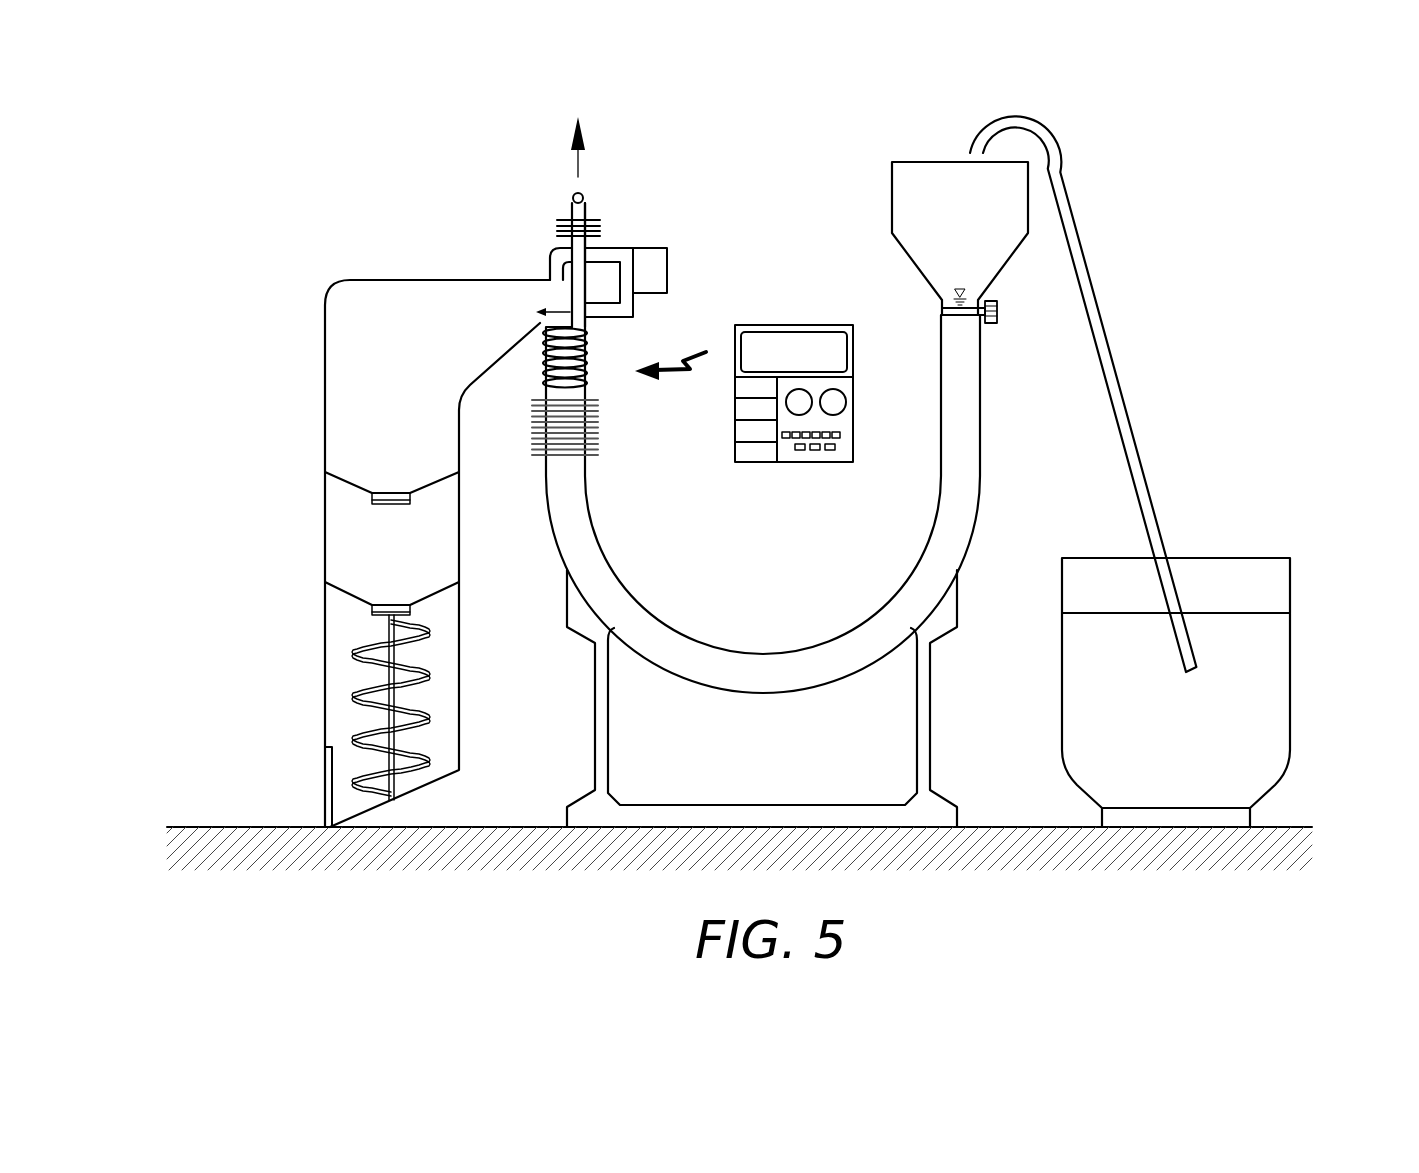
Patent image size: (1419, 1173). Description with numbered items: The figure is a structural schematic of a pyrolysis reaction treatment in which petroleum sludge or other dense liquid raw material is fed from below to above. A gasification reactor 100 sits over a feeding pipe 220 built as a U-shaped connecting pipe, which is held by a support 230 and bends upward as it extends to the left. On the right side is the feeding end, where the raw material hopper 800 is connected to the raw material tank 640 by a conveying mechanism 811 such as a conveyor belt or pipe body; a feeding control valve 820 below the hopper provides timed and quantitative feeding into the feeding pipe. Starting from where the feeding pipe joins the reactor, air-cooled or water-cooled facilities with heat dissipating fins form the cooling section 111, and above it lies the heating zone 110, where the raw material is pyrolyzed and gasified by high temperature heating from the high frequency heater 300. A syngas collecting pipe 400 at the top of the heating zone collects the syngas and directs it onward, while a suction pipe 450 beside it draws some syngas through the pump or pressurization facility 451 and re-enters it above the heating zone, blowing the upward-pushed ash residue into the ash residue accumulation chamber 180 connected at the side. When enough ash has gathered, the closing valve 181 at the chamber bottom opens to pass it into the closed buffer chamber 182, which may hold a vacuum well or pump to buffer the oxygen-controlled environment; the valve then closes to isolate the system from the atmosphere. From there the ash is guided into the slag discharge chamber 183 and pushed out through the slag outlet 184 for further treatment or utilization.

The gasification reactor 100 is at (589, 441).
The heating zone 110 is at (588, 335).
The cooling section 111 is at (592, 460).
The ash residue accumulation chamber 180 is at (328, 380).
The closing valve 181 is at (400, 505).
The buffer chamber 182 is at (328, 537).
The slag discharge chamber 183 is at (330, 656).
The slag outlet 184 is at (322, 785).
The feeding pipe 220 is at (773, 663).
The support 230 is at (925, 713).
The high frequency heater 300 is at (825, 462).
The syngas collecting pipe 400 is at (578, 198).
The suction pipe 450 is at (552, 255).
The pump or pressurization facility 451 is at (657, 255).
The raw material tank 640 is at (1273, 562).
The raw material hopper 800 is at (906, 163).
The conveying mechanism 811 is at (1122, 445).
The feeding control valve 820 is at (992, 323).